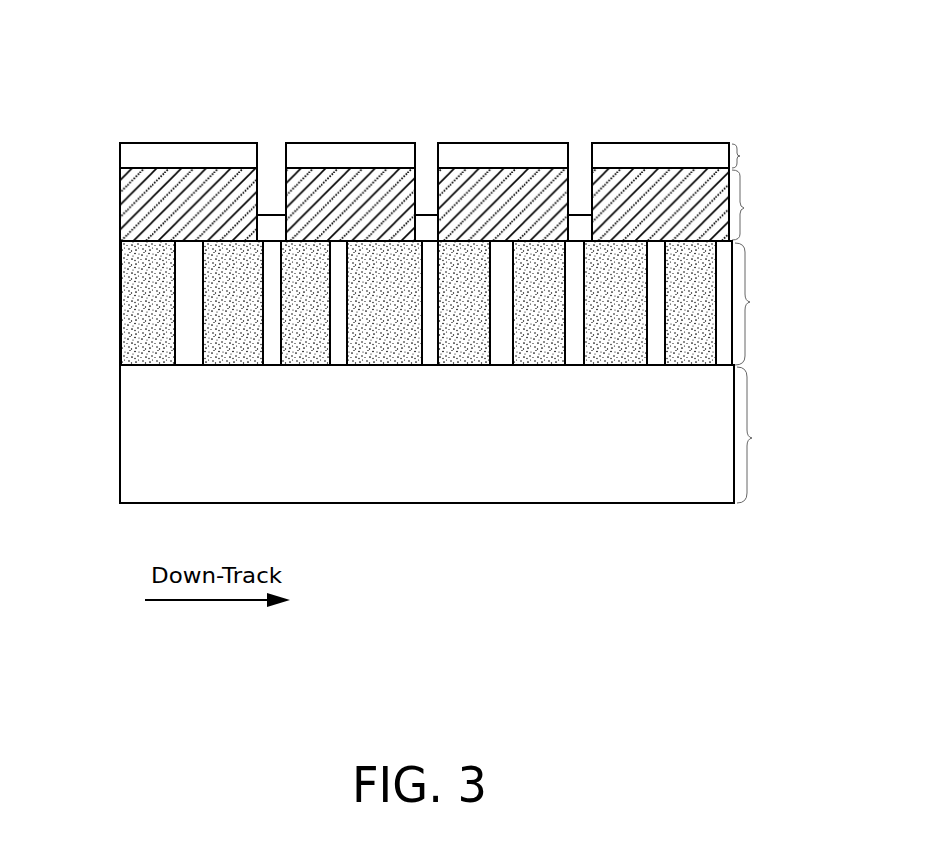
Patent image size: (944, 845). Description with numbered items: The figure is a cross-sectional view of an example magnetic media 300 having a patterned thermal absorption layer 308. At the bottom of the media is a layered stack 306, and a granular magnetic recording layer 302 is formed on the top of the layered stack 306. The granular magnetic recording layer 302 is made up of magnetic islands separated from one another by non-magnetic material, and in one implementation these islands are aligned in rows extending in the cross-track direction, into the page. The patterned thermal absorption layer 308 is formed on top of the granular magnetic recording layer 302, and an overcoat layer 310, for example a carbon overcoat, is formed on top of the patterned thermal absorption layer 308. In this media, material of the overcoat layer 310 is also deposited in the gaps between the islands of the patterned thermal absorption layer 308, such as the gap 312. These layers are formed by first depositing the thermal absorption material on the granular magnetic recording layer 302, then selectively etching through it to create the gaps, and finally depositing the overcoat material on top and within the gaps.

The magnetic media 300 is at (180, 70).
The granular magnetic recording layer 302 is at (750, 302).
The layered stack 306 is at (752, 438).
The patterned thermal absorption layer 308 is at (744, 208).
The overcoat layer 310 is at (740, 156).
The gap 312 is at (582, 150).